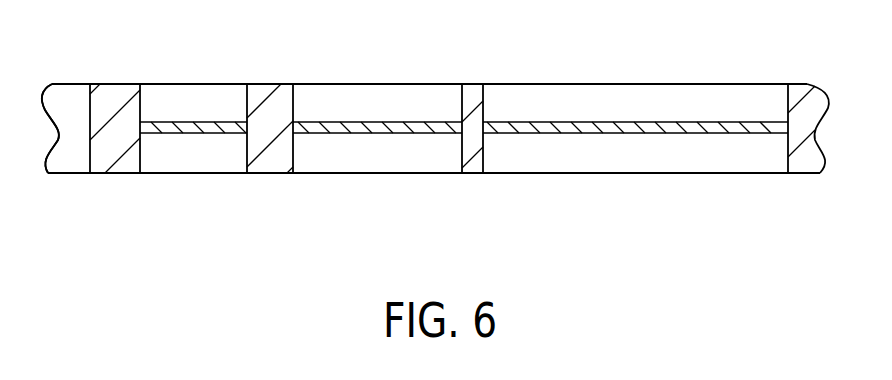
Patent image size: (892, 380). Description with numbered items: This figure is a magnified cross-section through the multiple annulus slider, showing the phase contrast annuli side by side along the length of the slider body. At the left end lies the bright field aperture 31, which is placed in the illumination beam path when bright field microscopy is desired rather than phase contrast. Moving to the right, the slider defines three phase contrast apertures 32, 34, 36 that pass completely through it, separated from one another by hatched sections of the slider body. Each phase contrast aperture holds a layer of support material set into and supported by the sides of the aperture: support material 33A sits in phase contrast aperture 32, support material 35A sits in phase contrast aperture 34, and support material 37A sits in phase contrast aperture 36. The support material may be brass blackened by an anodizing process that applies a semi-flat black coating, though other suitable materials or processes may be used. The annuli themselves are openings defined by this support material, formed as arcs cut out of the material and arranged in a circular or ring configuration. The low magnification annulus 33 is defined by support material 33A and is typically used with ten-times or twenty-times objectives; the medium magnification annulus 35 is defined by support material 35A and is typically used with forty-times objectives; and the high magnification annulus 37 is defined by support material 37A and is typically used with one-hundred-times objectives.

The bright field aperture 31 is at (70, 163).
The phase contrast aperture 32 is at (232, 97).
The low magnification annulus 33 is at (163, 131).
The support material 33A is at (238, 135).
The phase contrast aperture 34 is at (368, 97).
The medium magnification annulus 35 is at (322, 131).
The support material 35A is at (392, 135).
The phase contrast aperture 36 is at (621, 98).
The high magnification annulus 37 is at (514, 130).
The support material 37A is at (642, 135).